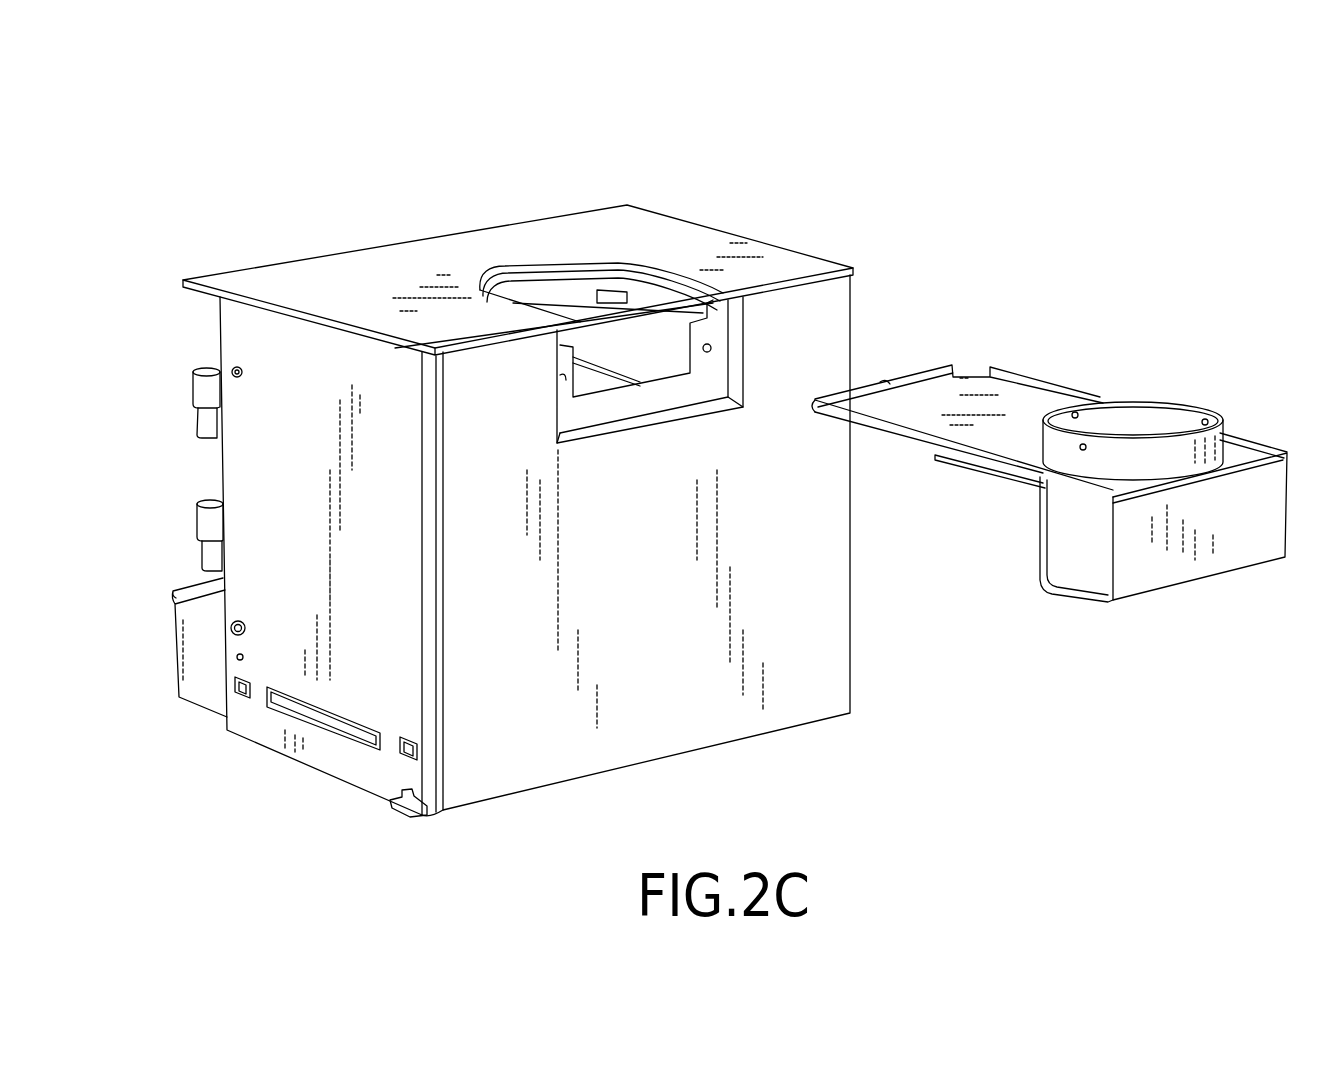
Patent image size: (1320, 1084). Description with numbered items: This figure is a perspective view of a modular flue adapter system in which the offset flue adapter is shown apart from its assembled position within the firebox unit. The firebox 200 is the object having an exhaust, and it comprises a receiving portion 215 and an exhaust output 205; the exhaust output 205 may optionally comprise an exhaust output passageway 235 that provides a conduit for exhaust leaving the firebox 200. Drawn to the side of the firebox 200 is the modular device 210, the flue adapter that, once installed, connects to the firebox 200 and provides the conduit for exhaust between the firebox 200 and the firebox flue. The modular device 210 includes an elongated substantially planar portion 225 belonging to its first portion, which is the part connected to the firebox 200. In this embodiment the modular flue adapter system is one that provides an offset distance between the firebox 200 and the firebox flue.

The firebox 200 is at (258, 150).
The exhaust output 205 is at (590, 330).
The receiving portion 215 is at (683, 300).
The exhaust output passageway 235 is at (607, 347).
The elongated substantially planar portion 225 is at (912, 405).
The modular device 210 is at (1152, 417).